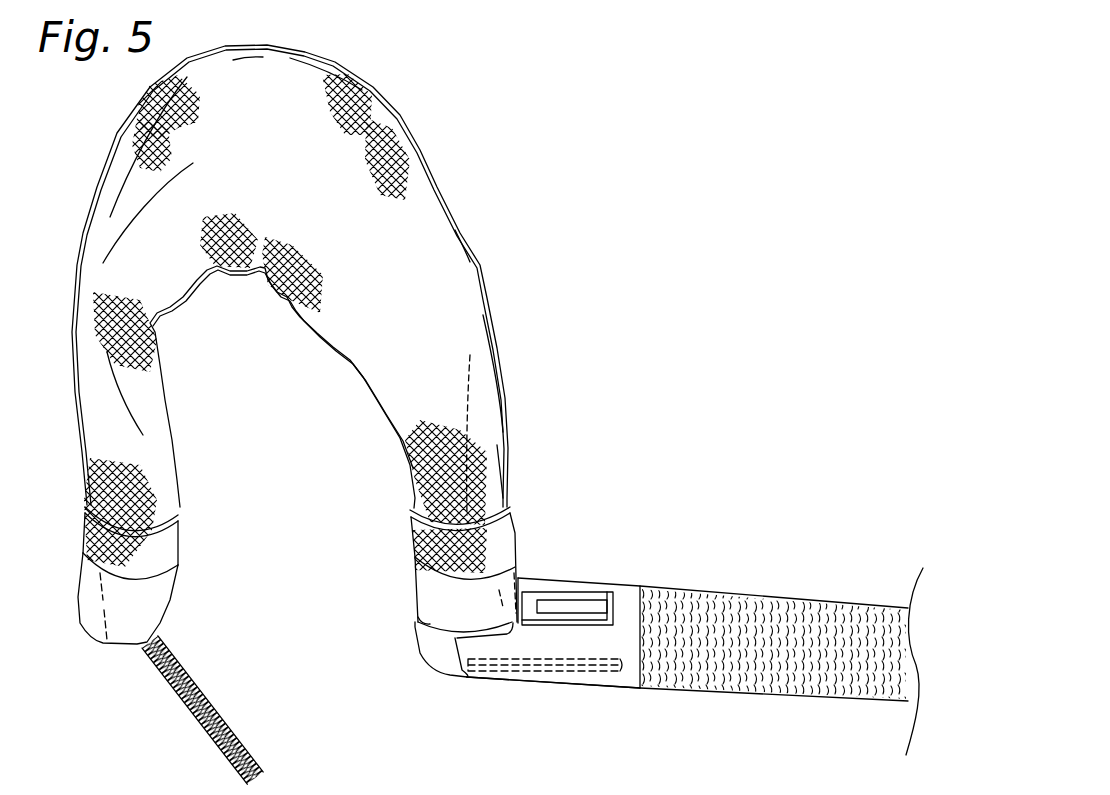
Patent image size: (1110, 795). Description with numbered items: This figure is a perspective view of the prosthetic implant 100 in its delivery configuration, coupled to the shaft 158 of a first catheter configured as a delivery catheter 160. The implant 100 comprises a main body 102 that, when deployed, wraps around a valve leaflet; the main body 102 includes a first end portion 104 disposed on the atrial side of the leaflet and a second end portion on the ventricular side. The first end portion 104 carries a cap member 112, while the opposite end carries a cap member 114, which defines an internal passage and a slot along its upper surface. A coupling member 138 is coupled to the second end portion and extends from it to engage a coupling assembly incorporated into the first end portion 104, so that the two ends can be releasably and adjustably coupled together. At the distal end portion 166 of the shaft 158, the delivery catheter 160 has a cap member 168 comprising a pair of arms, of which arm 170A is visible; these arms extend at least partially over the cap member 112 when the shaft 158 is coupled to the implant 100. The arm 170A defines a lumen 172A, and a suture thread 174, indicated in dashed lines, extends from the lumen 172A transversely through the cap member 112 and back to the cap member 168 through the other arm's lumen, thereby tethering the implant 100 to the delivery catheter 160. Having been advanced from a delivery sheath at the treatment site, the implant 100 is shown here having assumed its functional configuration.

The implant 100 is at (544, 174).
The main body 102 is at (393, 112).
The first end portion 104 is at (88, 455).
The cap member 112 is at (412, 585).
The cap member 114 is at (80, 583).
The coupling member 138 is at (200, 730).
The shaft 158 is at (750, 600).
The delivery catheter 160 is at (816, 606).
The distal end portion 166 is at (616, 688).
The cap member 168 is at (563, 688).
The arm 170A is at (480, 673).
The lumen 172A is at (552, 663).
The suture thread 174 is at (510, 675).